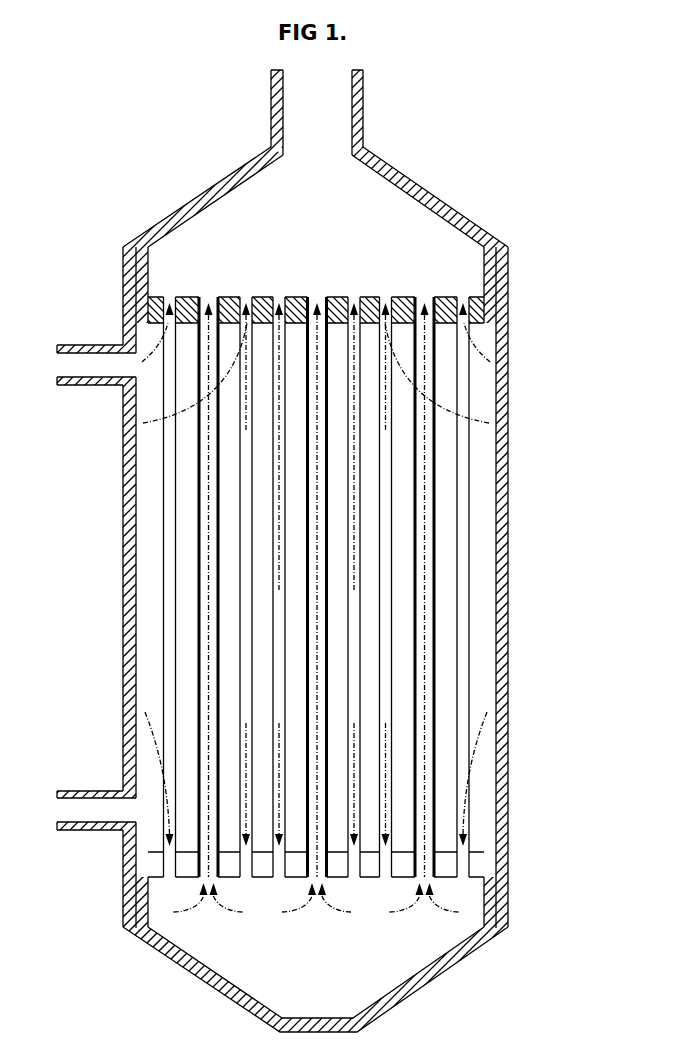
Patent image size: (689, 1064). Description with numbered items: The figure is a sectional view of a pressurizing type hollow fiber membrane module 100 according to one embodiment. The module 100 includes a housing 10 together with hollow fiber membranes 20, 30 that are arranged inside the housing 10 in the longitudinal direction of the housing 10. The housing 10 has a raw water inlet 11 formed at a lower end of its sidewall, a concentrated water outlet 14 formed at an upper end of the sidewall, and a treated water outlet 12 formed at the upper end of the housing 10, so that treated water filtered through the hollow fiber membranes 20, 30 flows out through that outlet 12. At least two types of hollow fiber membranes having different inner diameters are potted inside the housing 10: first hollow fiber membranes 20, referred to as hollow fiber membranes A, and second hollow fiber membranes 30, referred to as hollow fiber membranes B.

The pressurizing type hollow fiber membrane module 100 is at (488, 165).
The housing 10 is at (509, 468).
The raw water inlet 11 is at (92, 829).
The treated water outlet 12 is at (363, 118).
The concentrated water outlet 14 is at (95, 347).
The first hollow fiber membranes 20 is at (470, 452).
The second hollow fiber membranes 30 is at (436, 540).